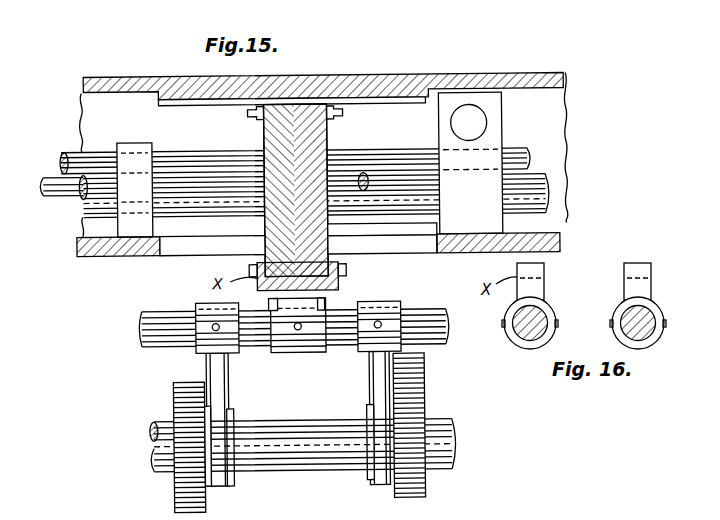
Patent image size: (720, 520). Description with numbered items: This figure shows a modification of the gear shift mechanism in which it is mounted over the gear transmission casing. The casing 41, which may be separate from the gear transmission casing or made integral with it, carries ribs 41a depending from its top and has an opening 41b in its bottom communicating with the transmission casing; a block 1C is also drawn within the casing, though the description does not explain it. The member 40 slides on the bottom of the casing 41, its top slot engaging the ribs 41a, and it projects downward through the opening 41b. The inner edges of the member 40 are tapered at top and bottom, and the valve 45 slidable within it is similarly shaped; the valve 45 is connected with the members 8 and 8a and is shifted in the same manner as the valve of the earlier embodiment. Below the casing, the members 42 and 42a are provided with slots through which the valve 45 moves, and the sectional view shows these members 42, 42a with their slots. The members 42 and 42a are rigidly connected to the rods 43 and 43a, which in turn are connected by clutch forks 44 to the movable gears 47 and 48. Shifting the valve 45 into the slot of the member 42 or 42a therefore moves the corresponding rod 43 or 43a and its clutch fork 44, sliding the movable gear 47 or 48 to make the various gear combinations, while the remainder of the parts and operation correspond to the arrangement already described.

In FIG. 15, the casing 41 is at (98, 75).
In FIG. 15, the ribs 41a is at (408, 104).
In FIG. 15, the opening 41b is at (407, 246).
In FIG. 15, the member 8 is at (60, 168).
In FIG. 15, the member 8a is at (97, 195).
In FIG. 15, the member 40 is at (328, 140).
In FIG. 15, the bearing block 1C is at (492, 112).
In FIG. 15, the valve 45 is at (292, 220).
In FIG. 15, the rod 43 is at (165, 329).
In FIG. 16, the rod 43 is at (532, 329).
In FIG. 16, the rod 43a is at (638, 347).
In FIG. 15, the clutch forks 44 is at (228, 378).
In FIG. 15, the movable gear 47 is at (176, 504).
In FIG. 15, the movable gear 48 is at (426, 480).
In FIG. 16, the member 42 is at (543, 298).
In FIG. 16, the member 42a is at (628, 279).